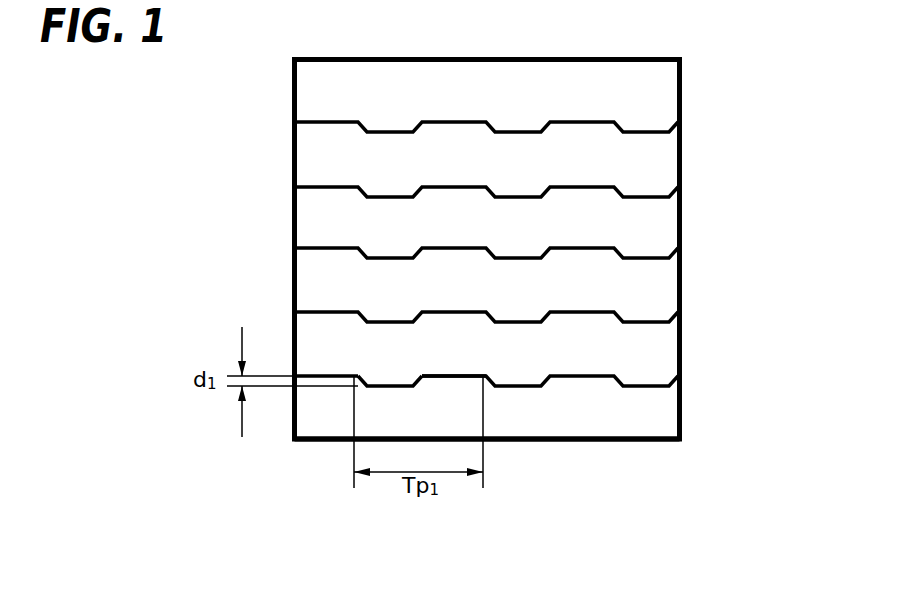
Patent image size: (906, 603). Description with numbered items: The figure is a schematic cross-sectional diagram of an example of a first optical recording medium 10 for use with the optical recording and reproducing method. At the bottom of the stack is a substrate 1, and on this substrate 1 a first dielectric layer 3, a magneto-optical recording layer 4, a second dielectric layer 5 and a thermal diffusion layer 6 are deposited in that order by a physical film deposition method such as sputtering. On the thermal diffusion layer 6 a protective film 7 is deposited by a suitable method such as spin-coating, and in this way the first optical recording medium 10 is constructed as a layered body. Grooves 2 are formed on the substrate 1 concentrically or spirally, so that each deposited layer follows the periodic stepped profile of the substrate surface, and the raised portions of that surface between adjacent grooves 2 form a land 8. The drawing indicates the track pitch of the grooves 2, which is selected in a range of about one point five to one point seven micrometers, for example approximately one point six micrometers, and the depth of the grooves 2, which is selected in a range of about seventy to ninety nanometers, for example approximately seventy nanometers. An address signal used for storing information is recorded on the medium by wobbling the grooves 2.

The substrate 1 is at (645, 409).
The grooves 2 is at (385, 383).
The first dielectric layer 3 is at (645, 349).
The magneto-optical recording layer 4 is at (645, 285).
The second dielectric layer 5 is at (645, 222).
The thermal diffusion layer 6 is at (645, 160).
The protective film 7 is at (645, 95).
The land 8 is at (455, 375).
The first optical recording medium 10 is at (534, 540).